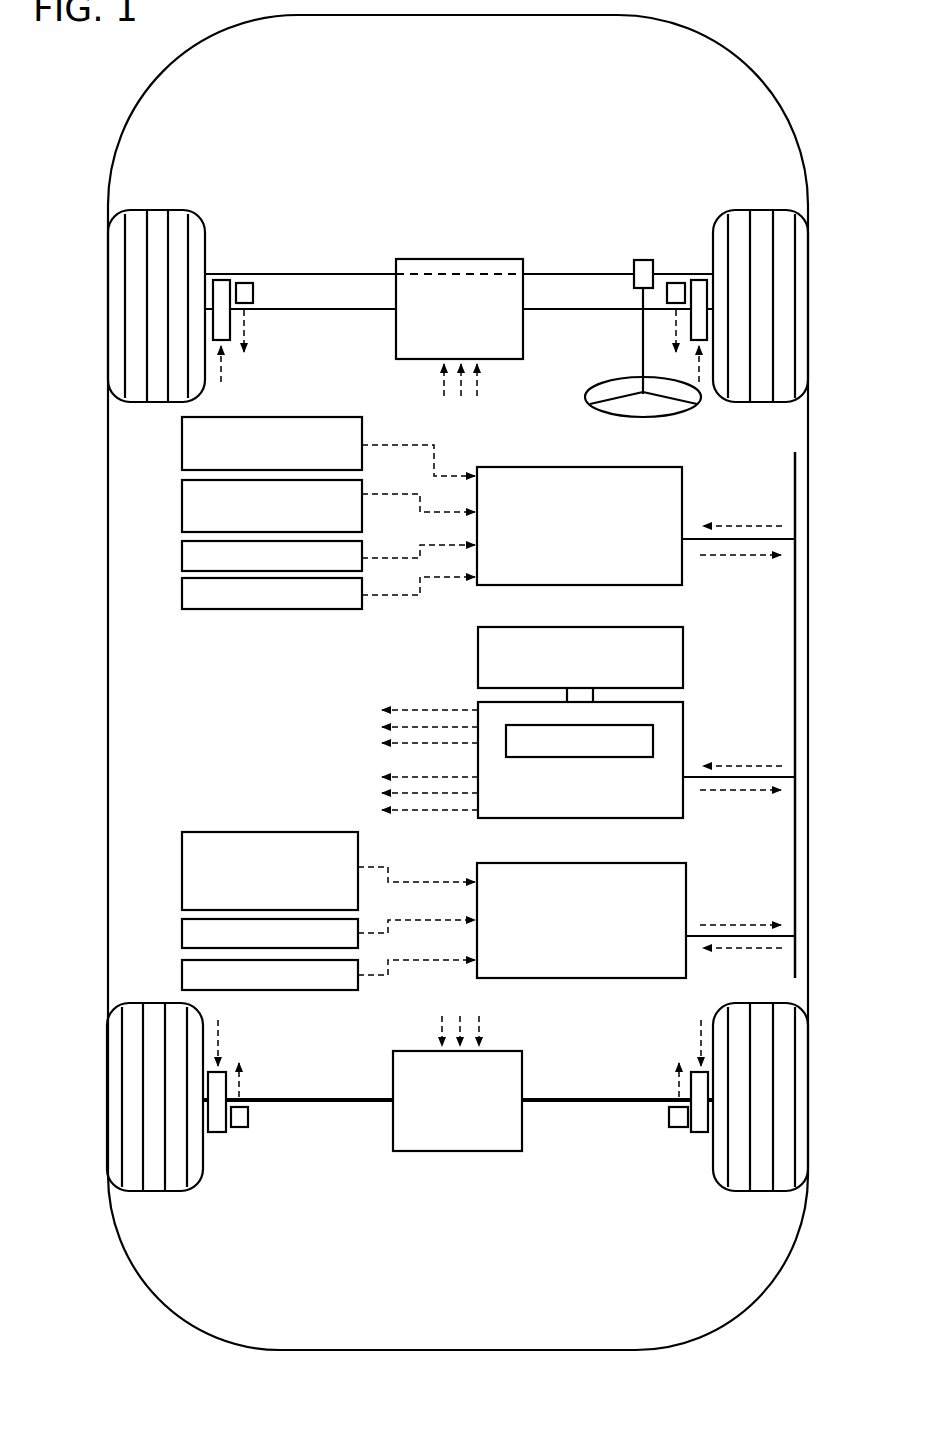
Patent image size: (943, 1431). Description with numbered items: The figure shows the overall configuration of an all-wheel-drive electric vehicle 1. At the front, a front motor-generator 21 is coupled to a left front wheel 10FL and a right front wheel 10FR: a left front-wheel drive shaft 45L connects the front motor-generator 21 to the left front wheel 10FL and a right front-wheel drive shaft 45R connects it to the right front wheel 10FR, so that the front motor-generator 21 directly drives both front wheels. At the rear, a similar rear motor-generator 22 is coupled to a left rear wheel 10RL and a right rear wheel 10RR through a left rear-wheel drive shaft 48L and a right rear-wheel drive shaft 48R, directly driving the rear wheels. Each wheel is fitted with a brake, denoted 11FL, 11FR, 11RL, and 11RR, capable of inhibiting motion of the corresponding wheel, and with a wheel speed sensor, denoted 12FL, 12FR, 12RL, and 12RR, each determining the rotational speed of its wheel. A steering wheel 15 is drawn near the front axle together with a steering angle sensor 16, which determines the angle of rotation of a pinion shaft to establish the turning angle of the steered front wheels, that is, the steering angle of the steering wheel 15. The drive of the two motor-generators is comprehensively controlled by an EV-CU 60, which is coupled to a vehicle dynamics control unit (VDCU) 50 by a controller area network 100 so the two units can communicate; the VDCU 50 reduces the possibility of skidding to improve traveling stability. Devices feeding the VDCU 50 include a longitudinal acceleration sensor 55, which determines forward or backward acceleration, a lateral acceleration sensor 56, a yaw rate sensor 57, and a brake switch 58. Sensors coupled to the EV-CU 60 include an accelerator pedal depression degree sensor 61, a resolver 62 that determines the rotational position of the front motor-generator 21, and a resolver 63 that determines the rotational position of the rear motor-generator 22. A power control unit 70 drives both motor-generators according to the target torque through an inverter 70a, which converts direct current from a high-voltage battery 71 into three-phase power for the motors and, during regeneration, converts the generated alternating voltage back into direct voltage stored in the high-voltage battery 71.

The all-wheel-drive electric vehicle 1 is at (666, 140).
The left front wheel 10FL is at (162, 208).
The right front wheel 10FR is at (761, 208).
The left rear wheel 10RL is at (155, 1192).
The right rear wheel 10RR is at (760, 1192).
The brake 11FL is at (222, 278).
The brake 11FR is at (703, 278).
The brake 11RL is at (215, 1134).
The brake 11RR is at (700, 1134).
The wheel speed sensor 12FL is at (246, 282).
The wheel speed sensor 12FR is at (675, 282).
The wheel speed sensor 12RL is at (240, 1129).
The wheel speed sensor 12RR is at (677, 1129).
The steering wheel 15 is at (626, 378).
The steering angle sensor 16 is at (637, 260).
The front motor-generator 21 is at (395, 331).
The rear motor-generator 22 is at (393, 1121).
The left front-wheel drive shaft 45L is at (325, 302).
The right front-wheel drive shaft 45R is at (589, 302).
The left rear-wheel drive shaft 48L is at (327, 1097).
The right rear-wheel drive shaft 48R is at (600, 1097).
The vehicle dynamics control unit 50 is at (683, 505).
The longitudinal acceleration sensor 55 is at (182, 447).
The lateral acceleration sensor 56 is at (182, 497).
The yaw rate sensor 57 is at (182, 557).
The brake switch 58 is at (182, 595).
The EV-CU 60 is at (687, 893).
The accelerator pedal depression degree sensor 61 is at (182, 878).
The resolver 62 is at (182, 935).
The resolver 63 is at (182, 975).
The power control unit 70 is at (575, 755).
The inverter 70a is at (653, 743).
The high-voltage battery 71 is at (685, 665).
The controller area network 100 is at (795, 585).